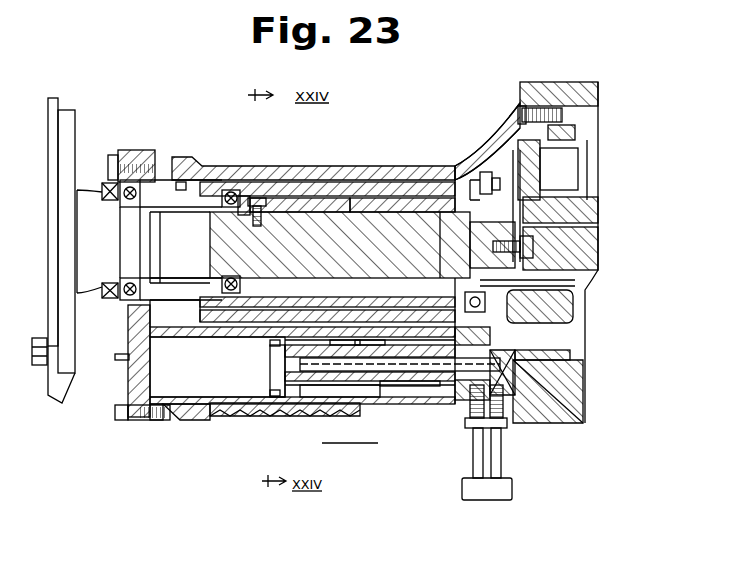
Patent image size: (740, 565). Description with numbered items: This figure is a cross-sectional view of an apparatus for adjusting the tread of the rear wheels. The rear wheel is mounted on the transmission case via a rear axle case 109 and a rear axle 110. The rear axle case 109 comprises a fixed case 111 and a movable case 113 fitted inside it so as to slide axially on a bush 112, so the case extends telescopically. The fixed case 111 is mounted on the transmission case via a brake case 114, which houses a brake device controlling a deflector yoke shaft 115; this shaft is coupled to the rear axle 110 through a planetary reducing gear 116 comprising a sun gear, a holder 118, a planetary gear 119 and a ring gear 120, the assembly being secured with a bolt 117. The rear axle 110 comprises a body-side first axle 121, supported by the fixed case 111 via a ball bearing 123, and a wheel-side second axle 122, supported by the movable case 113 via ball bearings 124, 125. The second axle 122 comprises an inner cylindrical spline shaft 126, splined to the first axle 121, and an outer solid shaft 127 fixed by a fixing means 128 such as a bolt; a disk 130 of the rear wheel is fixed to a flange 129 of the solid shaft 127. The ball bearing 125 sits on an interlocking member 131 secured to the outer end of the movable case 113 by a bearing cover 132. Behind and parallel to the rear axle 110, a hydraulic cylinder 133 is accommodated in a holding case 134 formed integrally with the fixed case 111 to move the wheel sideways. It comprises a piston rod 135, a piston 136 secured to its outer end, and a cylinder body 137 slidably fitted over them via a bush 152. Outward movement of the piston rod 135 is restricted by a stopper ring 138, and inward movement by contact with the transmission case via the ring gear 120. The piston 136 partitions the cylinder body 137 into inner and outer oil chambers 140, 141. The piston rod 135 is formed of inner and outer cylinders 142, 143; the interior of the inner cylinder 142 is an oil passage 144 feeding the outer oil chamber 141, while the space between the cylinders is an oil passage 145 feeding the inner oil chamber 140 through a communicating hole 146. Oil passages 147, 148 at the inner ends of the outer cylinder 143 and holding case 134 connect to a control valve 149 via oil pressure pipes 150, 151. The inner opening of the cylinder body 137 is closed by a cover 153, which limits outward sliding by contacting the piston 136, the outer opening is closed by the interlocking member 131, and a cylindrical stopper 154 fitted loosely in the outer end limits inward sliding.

The rear axle case 109 is at (390, 161).
The rear axle 110 is at (413, 202).
The fixed case 111 is at (318, 168).
The bush 112 is at (270, 180).
The movable case 113 is at (226, 190).
The brake case 114 is at (562, 415).
The deflector yoke shaft 115 is at (585, 251).
The planetary reducing gear 116 is at (586, 190).
The bolt 117 is at (557, 278).
The holder 118 is at (562, 160).
The planetary gear 119 is at (565, 159).
The ring gear 120 is at (507, 377).
The first axle 121 is at (437, 240).
The second axle 122 is at (183, 205).
The ball bearing 123 is at (480, 178).
The ball bearing 124 is at (256, 198).
The ball bearing 125 is at (134, 150).
The cylindrical spline shaft 126 is at (349, 210).
The solid shaft 127 is at (302, 363).
The fixing means 128 is at (293, 200).
The flange 129 is at (52, 259).
The disk 130 is at (58, 110).
The interlocking member 131 is at (128, 346).
The bearing cover 132 is at (108, 183).
The hydraulic cylinder 133 is at (382, 398).
The holding case 134 is at (312, 413).
The piston rod 135 is at (350, 454).
The piston 136 is at (247, 403).
The cylinder body 137 is at (205, 407).
The stopper ring 138 is at (520, 412).
The inner oil chamber 140 is at (408, 390).
The outer oil chamber 141 is at (180, 412).
The inner cylinder 142 is at (350, 375).
The outer cylinder 143 is at (360, 385).
The oil passage 144 is at (428, 368).
The oil passage 145 is at (395, 378).
The communicating hole 146 is at (275, 388).
The oil passage 147 is at (524, 362).
The oil passage 148 is at (470, 352).
The control valve 149 is at (487, 490).
The oil pressure pipe 150 is at (497, 453).
The oil pressure pipe 151 is at (476, 453).
The bush 152 is at (295, 400).
The cover 153 is at (470, 306).
The cylindrical stopper 154 is at (162, 423).